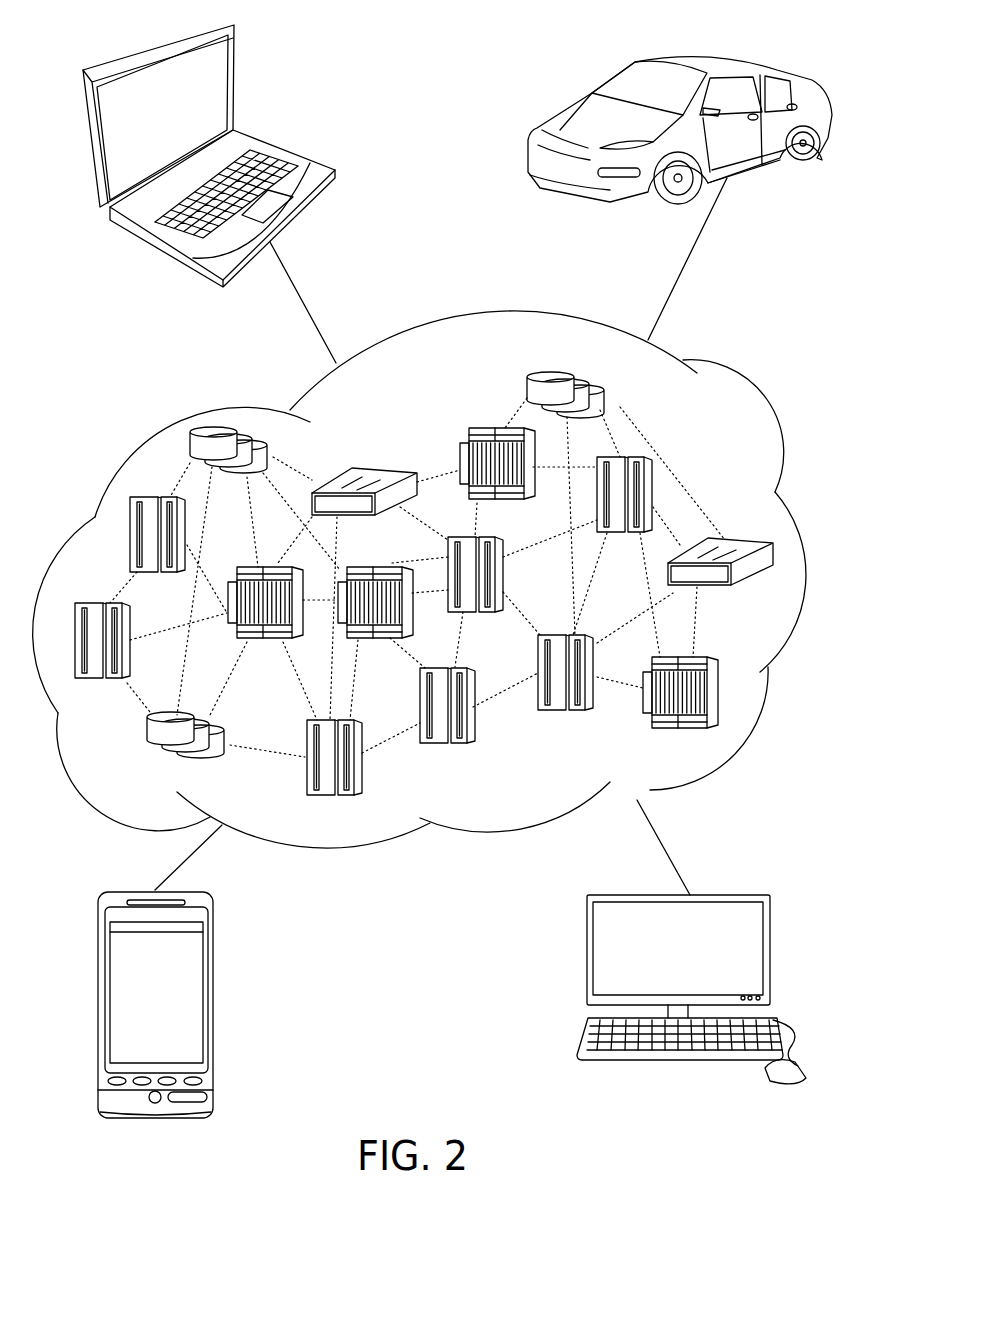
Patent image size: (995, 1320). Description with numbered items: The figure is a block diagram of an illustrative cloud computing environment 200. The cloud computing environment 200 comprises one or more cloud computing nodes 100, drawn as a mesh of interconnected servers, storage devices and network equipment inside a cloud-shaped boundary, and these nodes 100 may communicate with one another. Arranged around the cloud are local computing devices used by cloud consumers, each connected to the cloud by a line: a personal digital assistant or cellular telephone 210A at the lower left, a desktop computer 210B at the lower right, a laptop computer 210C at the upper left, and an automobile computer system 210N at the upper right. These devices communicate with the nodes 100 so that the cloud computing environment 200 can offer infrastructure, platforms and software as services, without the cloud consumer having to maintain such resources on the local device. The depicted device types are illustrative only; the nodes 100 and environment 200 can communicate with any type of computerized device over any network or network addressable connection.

The cloud computing node 100 is at (751, 522).
The cloud computing environment 200 is at (797, 363).
The personal digital assistant or cellular telephone 210A is at (208, 918).
The desktop computer 210B is at (770, 913).
The laptop computer 210C is at (335, 135).
The automobile computer system 210N is at (787, 68).